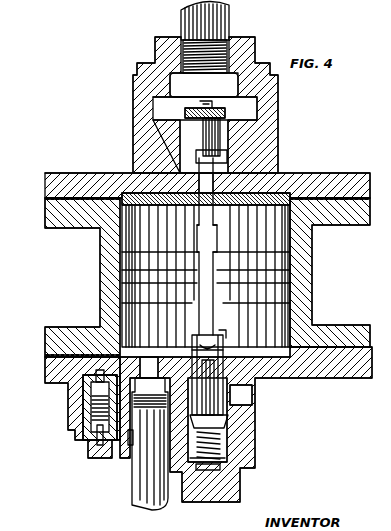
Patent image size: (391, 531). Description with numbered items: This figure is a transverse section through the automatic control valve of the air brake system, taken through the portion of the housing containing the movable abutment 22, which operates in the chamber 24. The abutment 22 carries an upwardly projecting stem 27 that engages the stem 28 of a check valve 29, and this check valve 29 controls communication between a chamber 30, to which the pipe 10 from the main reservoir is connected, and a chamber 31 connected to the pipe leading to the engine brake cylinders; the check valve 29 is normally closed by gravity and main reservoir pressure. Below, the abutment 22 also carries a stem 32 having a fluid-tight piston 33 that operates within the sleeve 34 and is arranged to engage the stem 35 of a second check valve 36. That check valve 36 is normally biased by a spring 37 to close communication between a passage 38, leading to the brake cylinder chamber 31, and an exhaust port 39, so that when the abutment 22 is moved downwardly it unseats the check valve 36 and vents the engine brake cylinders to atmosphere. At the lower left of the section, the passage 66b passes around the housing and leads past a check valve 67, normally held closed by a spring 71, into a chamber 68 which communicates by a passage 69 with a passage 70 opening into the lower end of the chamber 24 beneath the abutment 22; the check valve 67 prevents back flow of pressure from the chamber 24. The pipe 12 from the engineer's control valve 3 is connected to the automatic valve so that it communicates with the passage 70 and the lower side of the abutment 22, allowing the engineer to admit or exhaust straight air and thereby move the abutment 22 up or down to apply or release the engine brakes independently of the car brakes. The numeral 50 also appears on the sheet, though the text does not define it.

The engineer's control valve 3 is at (120, 16).
The pipe 10 is at (231, 18).
The pipe 12 is at (144, 487).
The movable abutment 22 is at (290, 273).
The chamber 24 is at (300, 228).
The stem 27 is at (205, 182).
The stem 28 is at (235, 170).
The check valve 29 is at (224, 110).
The chamber 30 is at (204, 85).
The chamber 31 is at (196, 162).
The stem 32 is at (215, 318).
The fluid-tight piston 33 is at (226, 360).
The sleeve 34 is at (234, 330).
The stem 35 is at (256, 381).
The check valve 36 is at (229, 422).
The spring 37 is at (222, 440).
The passage 38 is at (228, 447).
The exhaust port 39 is at (241, 395).
The unit 50 is at (48, 13).
The passage 66b is at (100, 366).
The check valve 67 is at (90, 388).
The chamber 68 is at (92, 410).
The passage 69 is at (130, 420).
The passage 70 is at (149, 367).
The spring 71 is at (100, 420).